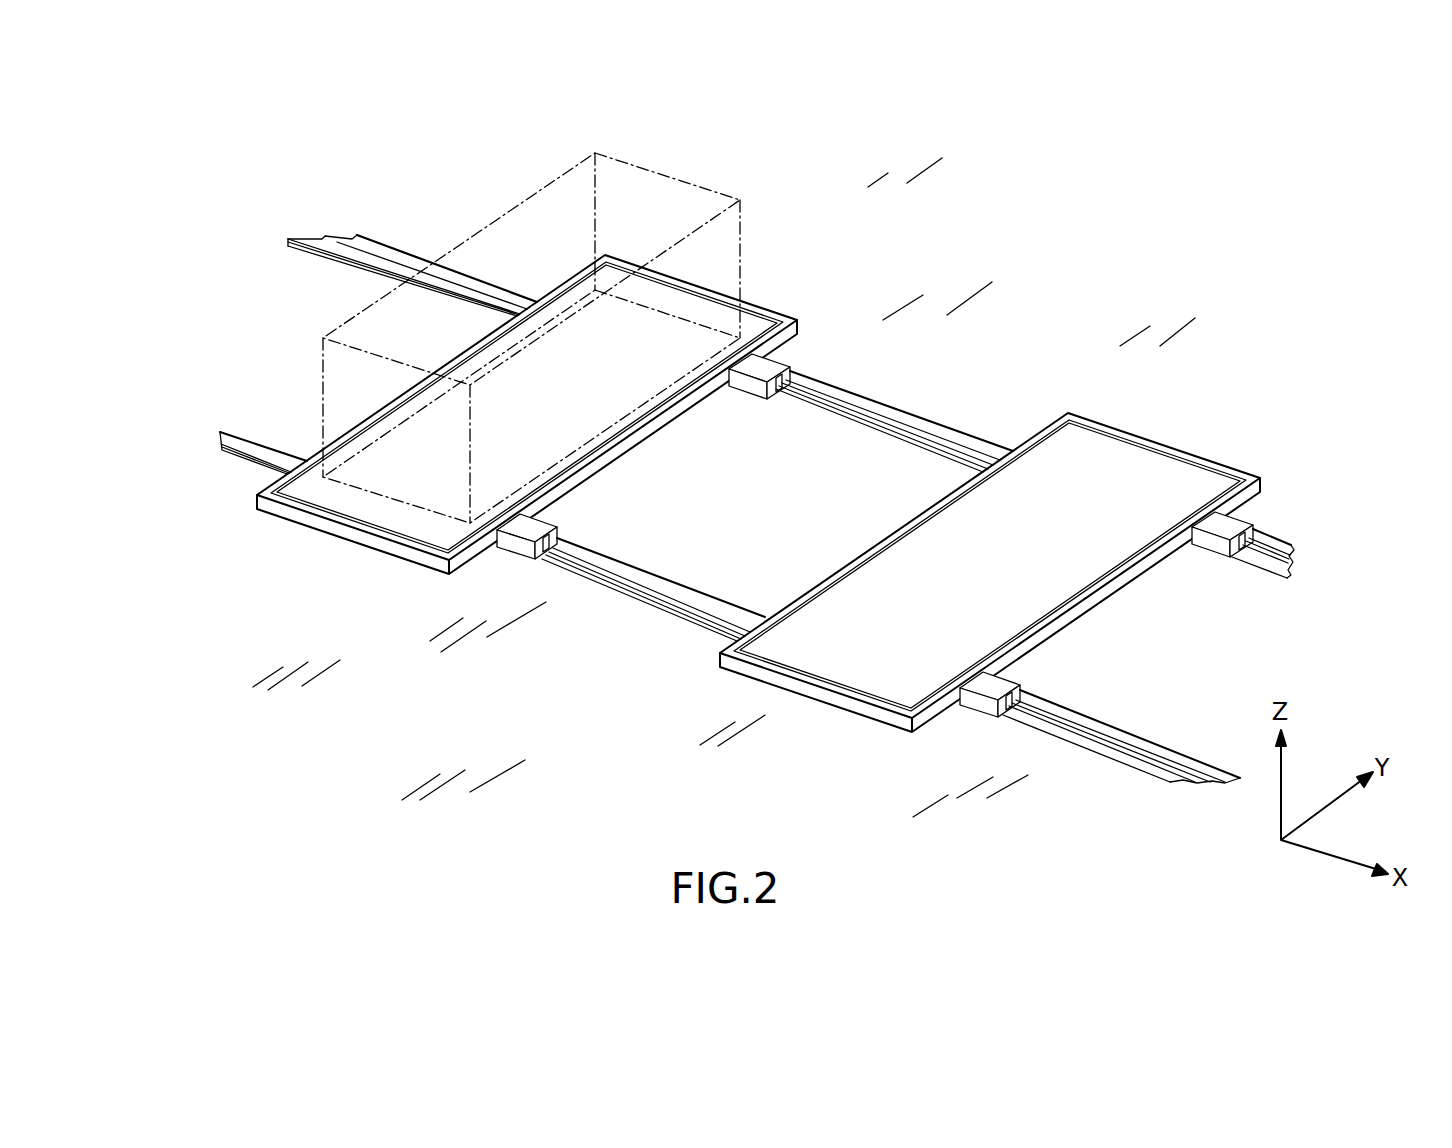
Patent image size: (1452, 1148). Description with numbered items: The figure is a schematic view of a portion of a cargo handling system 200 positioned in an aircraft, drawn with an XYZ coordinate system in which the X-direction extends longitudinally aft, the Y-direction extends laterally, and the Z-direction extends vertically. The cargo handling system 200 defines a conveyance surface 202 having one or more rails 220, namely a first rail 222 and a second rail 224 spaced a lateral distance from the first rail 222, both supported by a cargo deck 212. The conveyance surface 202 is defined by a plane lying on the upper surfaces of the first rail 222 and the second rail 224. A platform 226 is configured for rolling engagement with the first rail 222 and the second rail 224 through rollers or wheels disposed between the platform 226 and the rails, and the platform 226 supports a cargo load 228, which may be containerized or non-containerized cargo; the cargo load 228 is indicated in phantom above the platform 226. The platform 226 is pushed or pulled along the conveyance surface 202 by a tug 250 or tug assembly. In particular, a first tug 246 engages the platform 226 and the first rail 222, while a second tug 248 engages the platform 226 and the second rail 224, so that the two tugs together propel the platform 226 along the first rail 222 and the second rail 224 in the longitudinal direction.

The cargo handling system 200 is at (547, 329).
The conveyance surface 202 is at (920, 418).
The cargo deck 212 is at (561, 716).
The rails 220 is at (385, 244).
The first rail 222 is at (220, 462).
The second rail 224 is at (396, 249).
The platform 226 is at (789, 310).
The cargo load 228 is at (704, 186).
The first tug 246 is at (545, 520).
The second tug 248 is at (804, 413).
The tug 250 is at (757, 388).